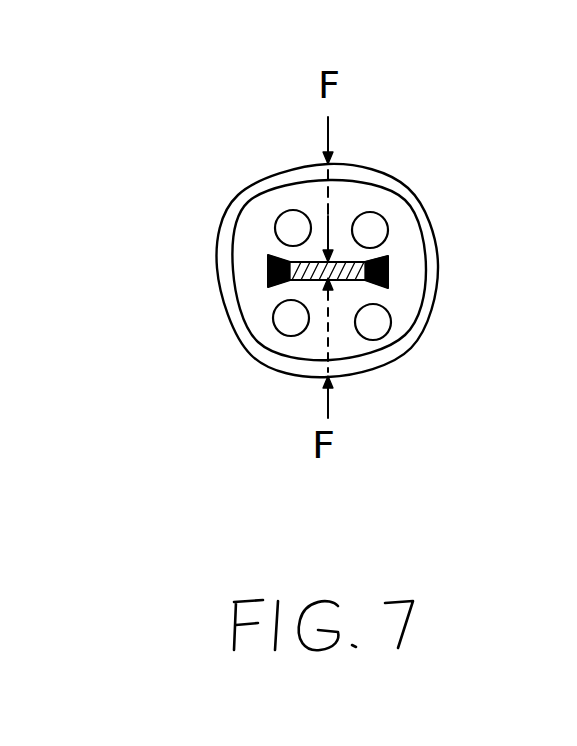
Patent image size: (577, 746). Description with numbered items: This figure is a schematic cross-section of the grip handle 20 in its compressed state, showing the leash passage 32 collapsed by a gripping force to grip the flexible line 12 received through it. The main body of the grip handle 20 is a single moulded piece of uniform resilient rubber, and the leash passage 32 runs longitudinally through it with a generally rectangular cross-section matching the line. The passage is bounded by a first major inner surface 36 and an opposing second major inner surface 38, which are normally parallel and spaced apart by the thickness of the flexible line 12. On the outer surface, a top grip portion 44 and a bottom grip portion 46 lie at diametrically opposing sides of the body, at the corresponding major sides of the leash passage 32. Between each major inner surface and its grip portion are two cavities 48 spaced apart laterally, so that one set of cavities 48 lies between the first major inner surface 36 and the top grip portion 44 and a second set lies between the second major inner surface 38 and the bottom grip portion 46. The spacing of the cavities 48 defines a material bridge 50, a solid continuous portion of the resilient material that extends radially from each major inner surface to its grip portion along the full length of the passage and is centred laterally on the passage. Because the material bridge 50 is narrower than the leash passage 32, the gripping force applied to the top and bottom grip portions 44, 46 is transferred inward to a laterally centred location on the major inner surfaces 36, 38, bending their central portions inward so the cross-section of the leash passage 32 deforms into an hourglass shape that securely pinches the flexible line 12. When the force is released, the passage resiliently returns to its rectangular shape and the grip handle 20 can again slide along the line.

The flexible line 12 is at (389, 268).
The grip handle 20 is at (430, 188).
The leash passage 32 is at (410, 285).
The first major inner surface 36 is at (305, 257).
The second major inner surface 38 is at (287, 285).
The top grip portion 44 is at (297, 167).
The bottom grip portion 46 is at (363, 375).
The cavities 48 is at (279, 220).
The material bridge 50 is at (348, 205).